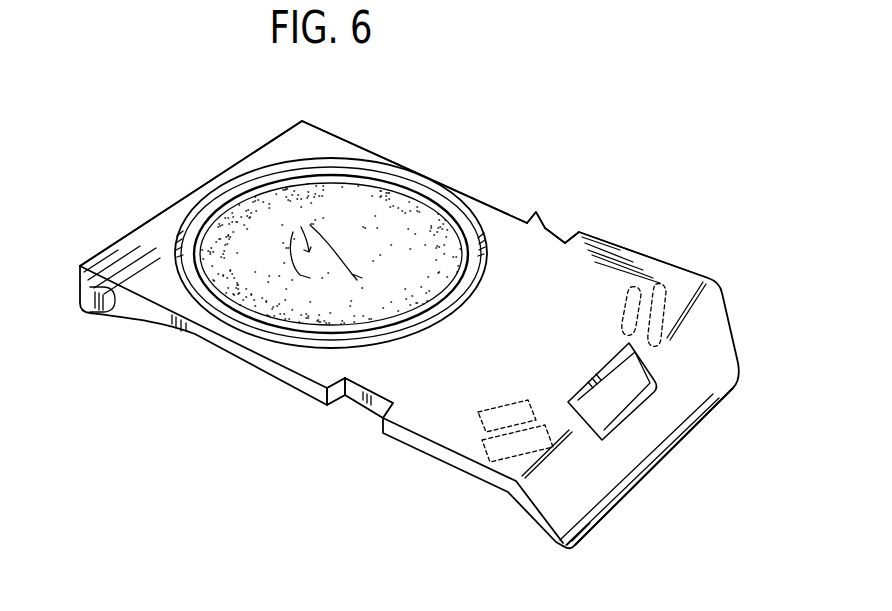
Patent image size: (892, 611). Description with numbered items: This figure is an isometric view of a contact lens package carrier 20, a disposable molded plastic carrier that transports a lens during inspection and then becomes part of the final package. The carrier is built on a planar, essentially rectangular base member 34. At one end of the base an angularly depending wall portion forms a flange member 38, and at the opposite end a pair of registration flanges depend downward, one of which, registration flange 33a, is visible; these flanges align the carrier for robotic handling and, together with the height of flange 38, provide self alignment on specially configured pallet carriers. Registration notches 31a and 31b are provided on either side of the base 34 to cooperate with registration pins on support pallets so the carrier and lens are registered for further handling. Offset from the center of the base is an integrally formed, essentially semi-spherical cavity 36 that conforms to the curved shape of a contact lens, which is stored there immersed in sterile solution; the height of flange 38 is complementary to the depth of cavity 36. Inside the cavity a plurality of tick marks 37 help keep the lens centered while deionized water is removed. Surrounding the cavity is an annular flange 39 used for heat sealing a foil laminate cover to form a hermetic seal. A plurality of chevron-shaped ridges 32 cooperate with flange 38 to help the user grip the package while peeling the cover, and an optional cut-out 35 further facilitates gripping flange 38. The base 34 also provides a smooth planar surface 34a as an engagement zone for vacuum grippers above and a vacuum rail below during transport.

The package carrier 20 is at (487, 97).
The registration notch 31a is at (363, 402).
The registration notch 31b is at (543, 230).
The chevron-shaped ridges 32 is at (658, 287).
The registration flange 33a is at (100, 313).
The base member 34 is at (140, 253).
The smooth planar surface 34a is at (563, 342).
The cut-out 35 is at (612, 395).
The cavity 36 is at (240, 220).
The tick marks 37 is at (356, 248).
The depending wall portion (flange member) 38 is at (620, 493).
The annular flange 39 is at (469, 224).